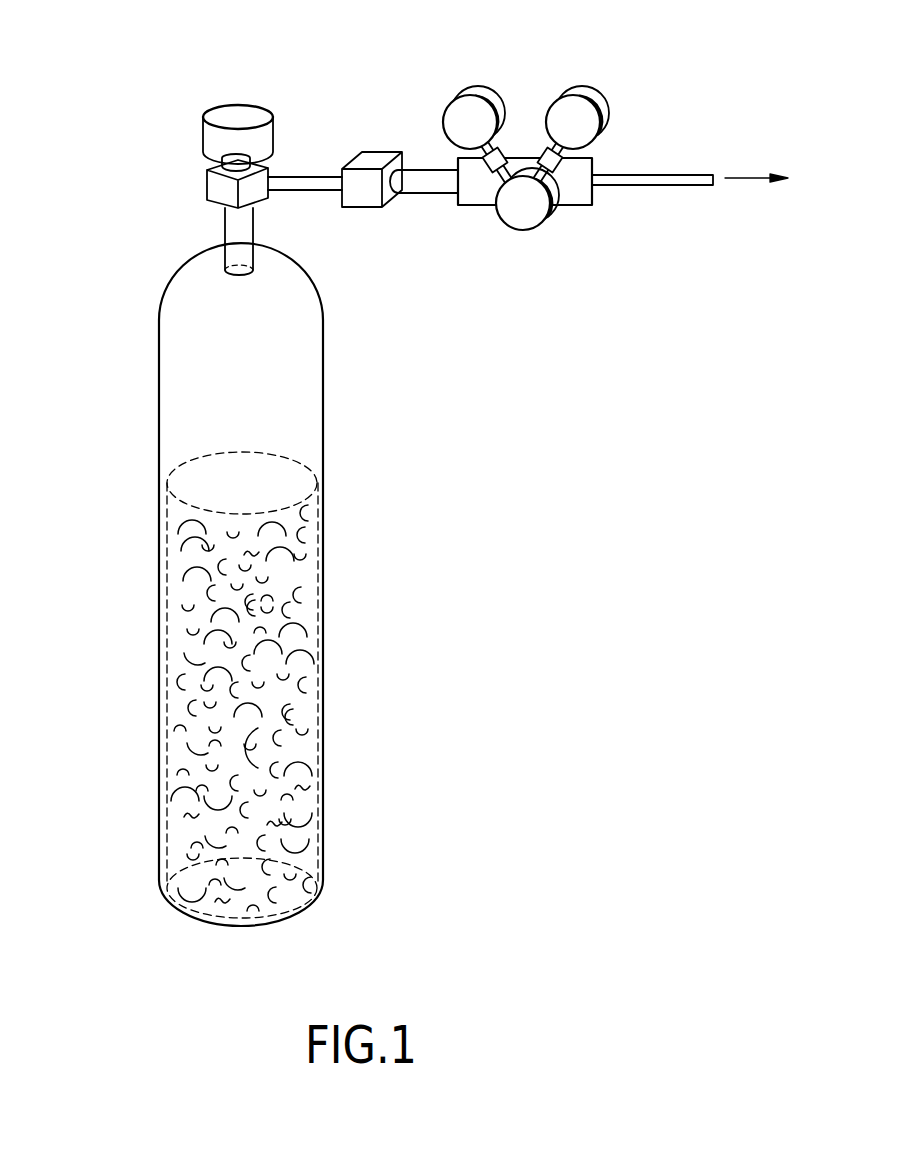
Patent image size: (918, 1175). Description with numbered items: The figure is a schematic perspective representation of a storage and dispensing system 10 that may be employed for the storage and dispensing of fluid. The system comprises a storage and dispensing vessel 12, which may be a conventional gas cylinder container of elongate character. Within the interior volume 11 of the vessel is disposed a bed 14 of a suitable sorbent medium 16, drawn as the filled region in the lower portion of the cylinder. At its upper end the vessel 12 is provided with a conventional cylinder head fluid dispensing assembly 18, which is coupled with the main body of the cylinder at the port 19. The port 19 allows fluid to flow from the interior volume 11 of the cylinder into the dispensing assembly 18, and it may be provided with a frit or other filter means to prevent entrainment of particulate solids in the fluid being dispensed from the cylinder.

The storage and dispensing system 10 is at (116, 182).
The interior volume 11 is at (308, 380).
The storage and dispensing vessel 12 is at (160, 595).
The bed 14 is at (188, 468).
The sorbent medium 16 is at (287, 590).
The cylinder head fluid dispensing assembly 18 is at (217, 78).
The port 19 is at (233, 272).